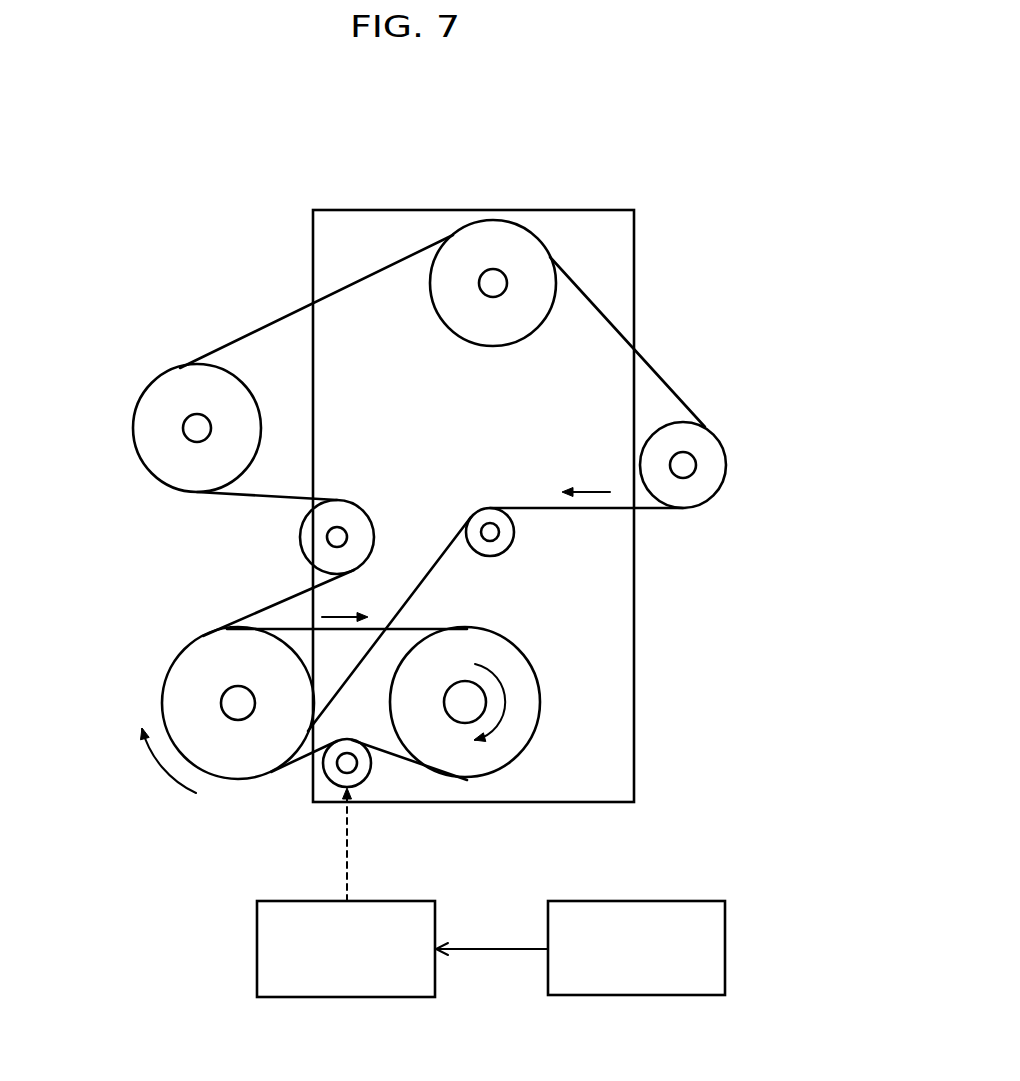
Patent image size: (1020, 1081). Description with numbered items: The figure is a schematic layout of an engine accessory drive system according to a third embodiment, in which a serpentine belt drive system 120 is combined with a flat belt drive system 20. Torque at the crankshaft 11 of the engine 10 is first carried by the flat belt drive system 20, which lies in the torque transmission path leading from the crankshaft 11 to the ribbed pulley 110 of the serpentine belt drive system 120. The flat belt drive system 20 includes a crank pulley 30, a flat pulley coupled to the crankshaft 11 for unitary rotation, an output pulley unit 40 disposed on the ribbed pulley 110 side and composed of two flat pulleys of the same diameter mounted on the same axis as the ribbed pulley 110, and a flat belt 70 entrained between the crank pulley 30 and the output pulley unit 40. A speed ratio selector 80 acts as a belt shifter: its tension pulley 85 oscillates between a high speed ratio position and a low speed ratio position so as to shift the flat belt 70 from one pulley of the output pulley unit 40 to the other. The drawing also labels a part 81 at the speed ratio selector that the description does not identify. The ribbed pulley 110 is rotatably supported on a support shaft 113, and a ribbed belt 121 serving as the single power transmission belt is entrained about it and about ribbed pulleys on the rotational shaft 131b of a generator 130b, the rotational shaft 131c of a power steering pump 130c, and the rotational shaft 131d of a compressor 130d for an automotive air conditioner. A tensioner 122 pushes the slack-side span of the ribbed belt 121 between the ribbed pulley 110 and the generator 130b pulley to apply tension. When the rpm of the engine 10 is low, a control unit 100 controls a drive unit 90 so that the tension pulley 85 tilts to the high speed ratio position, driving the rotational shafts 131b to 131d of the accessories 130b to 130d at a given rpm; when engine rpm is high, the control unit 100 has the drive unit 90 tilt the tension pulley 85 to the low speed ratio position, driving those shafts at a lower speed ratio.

The engine 10 is at (462, 450).
The crankshaft 11 is at (458, 723).
The flat belt drive system 20 is at (277, 626).
The crank pulley 30 is at (404, 754).
The output pulley unit 40 is at (233, 760).
The ribbed pulley 110 is at (216, 803).
The support shaft 113 is at (227, 690).
The flat belt 70 is at (423, 628).
The speed ratio selector 80 is at (320, 772).
The roller shaft 81 is at (363, 786).
The tension pulley 85 is at (340, 787).
The drive unit 90 is at (393, 997).
The control unit 100 is at (575, 997).
The serpentine belt drive system 120 is at (228, 496).
The ribbed belt 121 is at (665, 380).
The tensioner 122 is at (300, 538).
The generator 130b is at (178, 422).
The rotational shaft of generator 131b is at (195, 418).
The power steering pump 130c is at (484, 270).
The rotational shaft of power steering pump 131c is at (508, 268).
The compressor 130d is at (687, 447).
The rotational shaft of compressor 131d is at (696, 465).